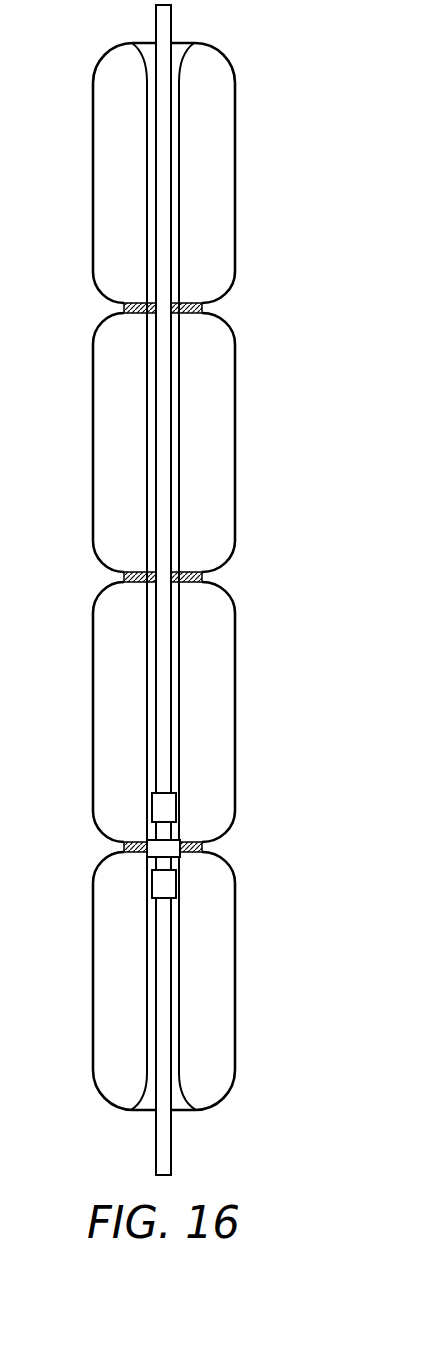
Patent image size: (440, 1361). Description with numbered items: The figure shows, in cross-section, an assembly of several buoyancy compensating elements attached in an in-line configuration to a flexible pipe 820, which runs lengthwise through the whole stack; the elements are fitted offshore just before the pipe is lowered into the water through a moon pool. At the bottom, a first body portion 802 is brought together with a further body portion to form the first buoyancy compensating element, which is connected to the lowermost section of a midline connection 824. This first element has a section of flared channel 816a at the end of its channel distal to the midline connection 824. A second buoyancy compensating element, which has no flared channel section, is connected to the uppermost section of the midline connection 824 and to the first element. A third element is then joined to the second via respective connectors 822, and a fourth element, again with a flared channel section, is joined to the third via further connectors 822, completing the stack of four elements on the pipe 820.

The first body portion 802 is at (237, 901).
The section of flared channel 816a is at (182, 1083).
The flexible pipe 820 is at (173, 1155).
The connectors 822 is at (201, 307).
The midline connection 824 is at (150, 838).